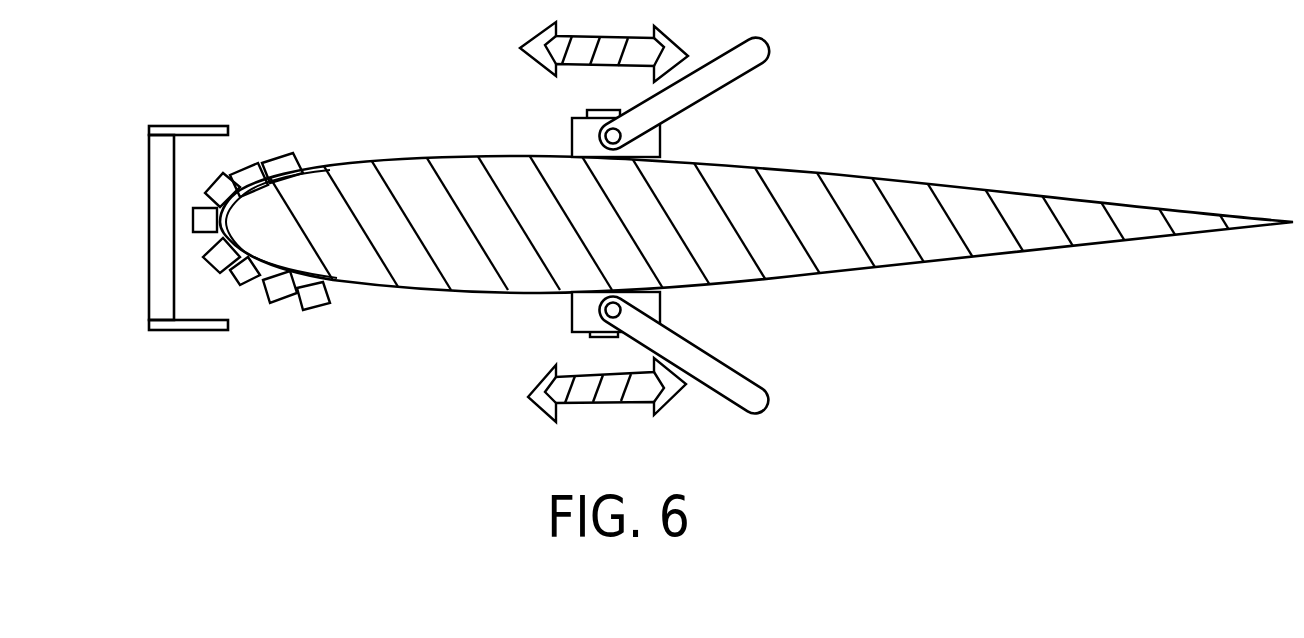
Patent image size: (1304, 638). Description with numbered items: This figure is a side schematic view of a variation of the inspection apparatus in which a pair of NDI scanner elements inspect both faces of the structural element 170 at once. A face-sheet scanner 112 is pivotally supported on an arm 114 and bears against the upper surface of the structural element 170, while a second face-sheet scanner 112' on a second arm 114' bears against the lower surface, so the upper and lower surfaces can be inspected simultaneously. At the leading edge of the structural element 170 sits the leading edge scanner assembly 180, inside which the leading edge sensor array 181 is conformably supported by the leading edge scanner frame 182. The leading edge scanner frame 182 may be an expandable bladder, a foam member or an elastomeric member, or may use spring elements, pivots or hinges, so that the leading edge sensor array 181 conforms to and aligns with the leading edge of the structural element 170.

The structural element 170 is at (413, 157).
The face-sheet scanner 112 is at (558, 121).
The face-sheet scanner 112' is at (553, 318).
The arm 114 is at (711, 94).
The arm 114' is at (710, 354).
The leading edge scanner assembly 180 is at (210, 284).
The leading edge sensor array 181 is at (310, 290).
The leading edge scanner frame 182 is at (147, 190).